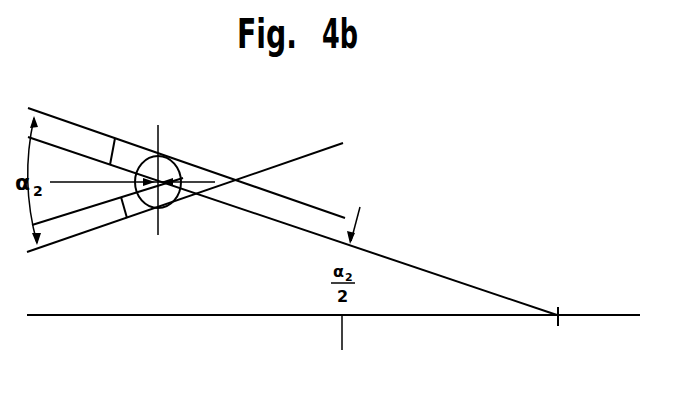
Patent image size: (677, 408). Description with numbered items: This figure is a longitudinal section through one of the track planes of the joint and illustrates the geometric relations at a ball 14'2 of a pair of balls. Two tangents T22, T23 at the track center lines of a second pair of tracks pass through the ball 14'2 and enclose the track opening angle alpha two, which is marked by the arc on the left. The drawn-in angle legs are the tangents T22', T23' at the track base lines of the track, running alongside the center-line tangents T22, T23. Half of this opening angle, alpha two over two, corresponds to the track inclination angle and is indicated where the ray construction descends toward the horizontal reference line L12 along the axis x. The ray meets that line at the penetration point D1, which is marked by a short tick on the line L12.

The ball 14'2 is at (152, 172).
The tangent at track center line T22 is at (292, 203).
The tangent at track base line T22' is at (186, 143).
The tangent at track center line T23 is at (107, 227).
The tangent at track base line T23' is at (185, 221).
The penetration point D1 is at (559, 307).
The detector line L12 is at (610, 316).
The axis x is at (420, 316).